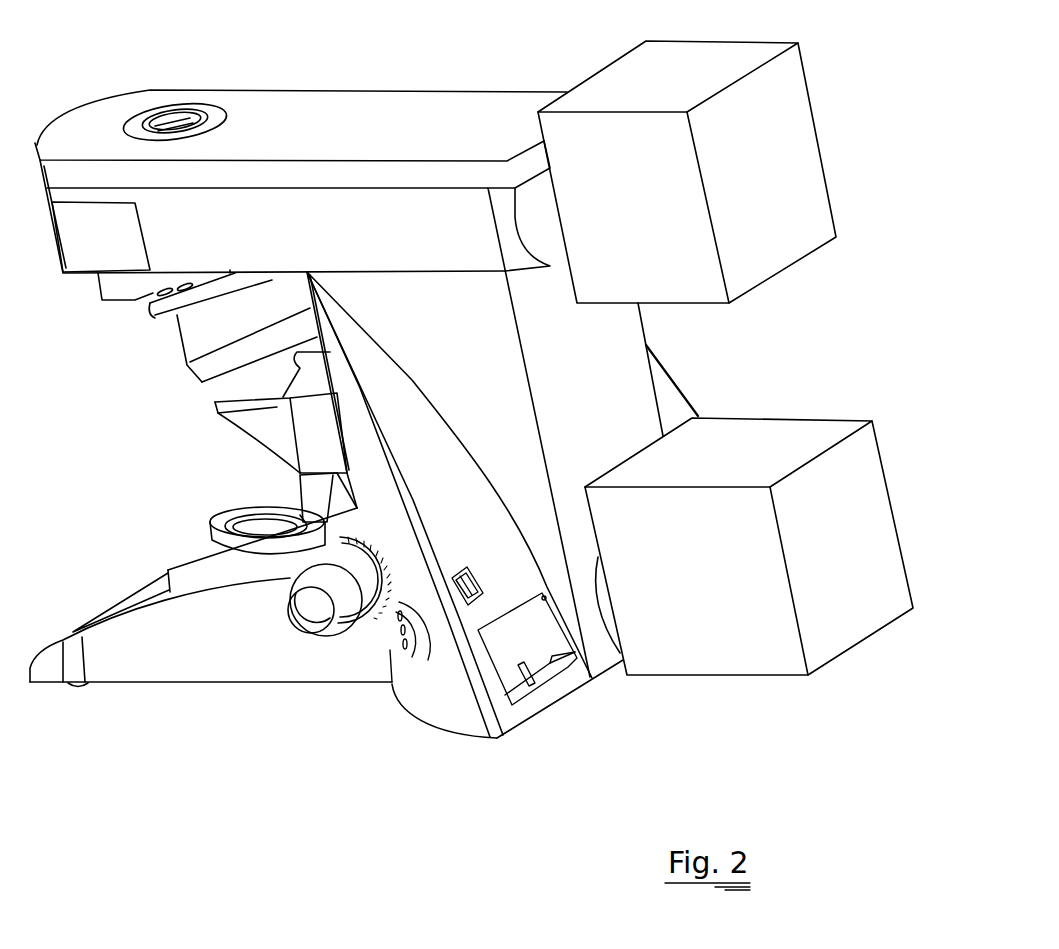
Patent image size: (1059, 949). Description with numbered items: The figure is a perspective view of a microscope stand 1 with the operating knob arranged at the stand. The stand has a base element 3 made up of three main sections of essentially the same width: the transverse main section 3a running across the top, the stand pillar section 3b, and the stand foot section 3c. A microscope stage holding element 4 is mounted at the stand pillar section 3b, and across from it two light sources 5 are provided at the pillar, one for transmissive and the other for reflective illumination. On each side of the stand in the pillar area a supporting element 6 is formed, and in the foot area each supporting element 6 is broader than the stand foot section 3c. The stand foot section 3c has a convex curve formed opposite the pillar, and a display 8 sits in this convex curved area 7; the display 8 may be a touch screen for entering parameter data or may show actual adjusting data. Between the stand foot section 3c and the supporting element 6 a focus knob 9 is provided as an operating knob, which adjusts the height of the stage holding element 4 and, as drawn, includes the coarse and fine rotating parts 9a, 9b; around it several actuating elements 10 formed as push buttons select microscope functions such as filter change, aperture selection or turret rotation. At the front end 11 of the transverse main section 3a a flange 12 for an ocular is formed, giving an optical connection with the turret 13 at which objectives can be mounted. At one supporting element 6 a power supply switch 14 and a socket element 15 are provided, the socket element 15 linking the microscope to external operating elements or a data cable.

The microscope stand 1 is at (283, 76).
The base element 3 is at (606, 361).
The transverse main section 3a is at (297, 154).
The stand pillar section 3b is at (505, 333).
The stand foot section 3c is at (178, 660).
The microscope stage holding element 4 is at (237, 417).
The light source 5 is at (650, 201).
The supporting element 6 is at (680, 393).
The convex curved area 7 is at (68, 640).
The display 8 is at (135, 598).
The focus knob 9 is at (298, 577).
The coarse focus gear 9a is at (382, 627).
The fine focus knob 9b is at (311, 612).
The actuating elements 10 is at (412, 648).
The front end 11 is at (52, 128).
The flange 12 is at (195, 108).
The turret 13 is at (190, 348).
The power supply switch 14 is at (460, 572).
The socket element 15 is at (527, 623).